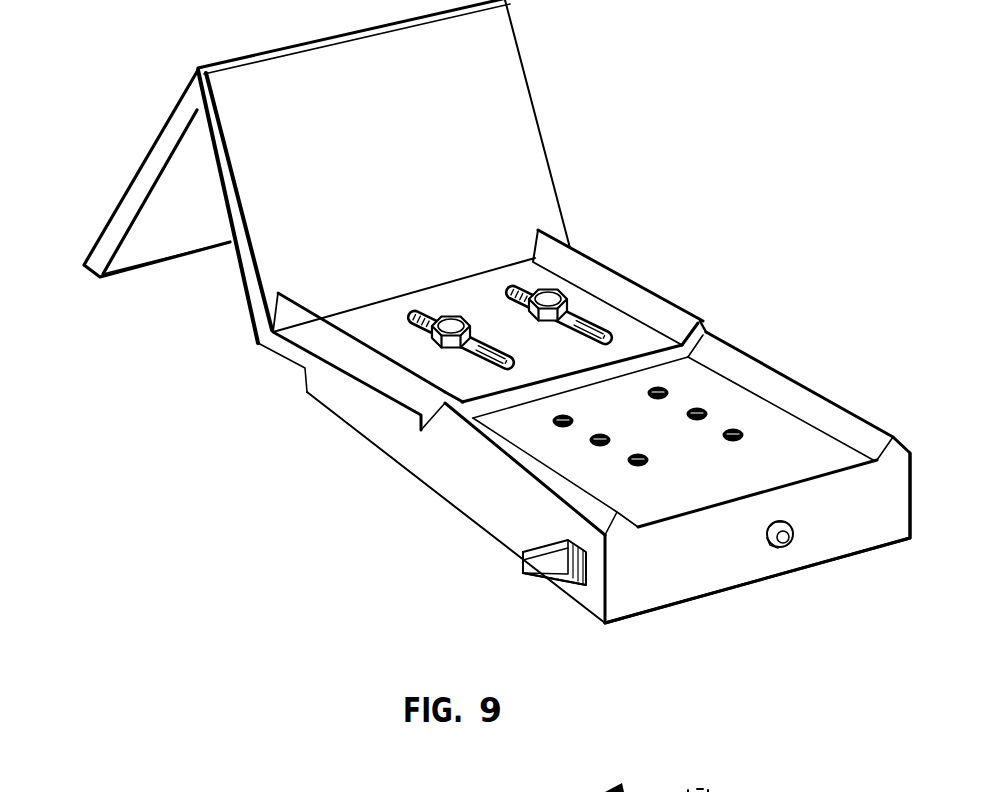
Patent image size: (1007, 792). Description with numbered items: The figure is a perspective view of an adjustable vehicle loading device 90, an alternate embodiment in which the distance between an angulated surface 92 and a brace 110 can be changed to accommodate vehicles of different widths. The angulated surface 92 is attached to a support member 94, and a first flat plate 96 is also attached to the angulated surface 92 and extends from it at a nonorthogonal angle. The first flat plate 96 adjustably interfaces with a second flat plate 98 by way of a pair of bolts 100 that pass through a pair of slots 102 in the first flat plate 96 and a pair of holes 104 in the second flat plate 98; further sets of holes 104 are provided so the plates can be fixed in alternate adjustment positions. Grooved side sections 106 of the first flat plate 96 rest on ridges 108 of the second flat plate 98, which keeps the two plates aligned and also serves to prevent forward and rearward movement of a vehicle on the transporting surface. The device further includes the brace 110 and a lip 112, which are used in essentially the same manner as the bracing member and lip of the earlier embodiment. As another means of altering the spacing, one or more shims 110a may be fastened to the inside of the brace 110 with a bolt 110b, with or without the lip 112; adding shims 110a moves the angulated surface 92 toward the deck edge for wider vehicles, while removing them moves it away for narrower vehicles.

The adjustable vehicle loading device 90 is at (259, 453).
The angulated surface 92 is at (465, 93).
The support member 94 is at (143, 166).
The first flat plate 96 is at (652, 310).
The second flat plate 98 is at (781, 433).
The bolts 100 is at (555, 290).
The slots 102 is at (641, 338).
The holes 104 is at (666, 391).
The grooved side sections 106 is at (337, 348).
The ridges 108 is at (522, 471).
The brace 110 is at (824, 510).
The shims 110a is at (522, 556).
The bolt 110b is at (786, 548).
The lip 112 is at (552, 580).